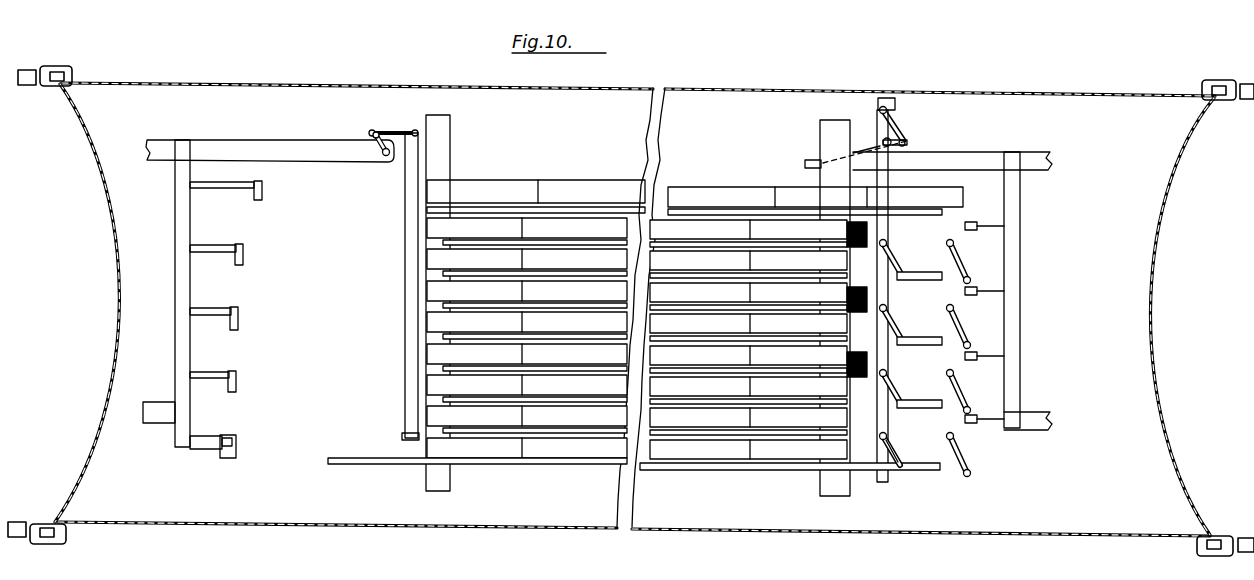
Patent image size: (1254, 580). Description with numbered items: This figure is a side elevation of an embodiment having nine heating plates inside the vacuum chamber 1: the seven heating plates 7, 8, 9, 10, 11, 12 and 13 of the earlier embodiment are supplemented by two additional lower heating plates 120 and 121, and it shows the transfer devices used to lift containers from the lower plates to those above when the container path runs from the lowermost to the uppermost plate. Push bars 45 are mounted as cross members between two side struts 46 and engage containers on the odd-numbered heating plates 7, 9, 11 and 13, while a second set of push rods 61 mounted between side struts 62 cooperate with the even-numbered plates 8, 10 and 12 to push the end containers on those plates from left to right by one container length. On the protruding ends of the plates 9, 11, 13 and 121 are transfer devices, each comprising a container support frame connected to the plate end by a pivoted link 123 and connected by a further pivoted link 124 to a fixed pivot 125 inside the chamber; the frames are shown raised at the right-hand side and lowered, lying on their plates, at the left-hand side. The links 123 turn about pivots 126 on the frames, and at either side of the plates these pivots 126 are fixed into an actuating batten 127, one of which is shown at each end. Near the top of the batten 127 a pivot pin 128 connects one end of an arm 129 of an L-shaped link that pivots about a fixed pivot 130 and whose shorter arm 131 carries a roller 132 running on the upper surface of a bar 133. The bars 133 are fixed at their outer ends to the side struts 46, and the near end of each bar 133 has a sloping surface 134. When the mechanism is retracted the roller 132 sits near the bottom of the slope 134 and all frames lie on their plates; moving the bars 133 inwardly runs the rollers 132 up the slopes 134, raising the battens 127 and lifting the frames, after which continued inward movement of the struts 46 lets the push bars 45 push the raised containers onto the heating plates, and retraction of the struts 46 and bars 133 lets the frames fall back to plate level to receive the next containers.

The vacuum chamber 1 is at (410, 74).
The first heating plate 7 is at (427, 210).
The heating plate 8 is at (398, 240).
The heating plate 9 is at (424, 273).
The heating plate 10 is at (398, 302).
The heating plate 11 is at (424, 341).
The heating plate 12 is at (368, 366).
The heating plate 13 is at (424, 404).
The push bars 45 is at (976, 224).
The side struts 46 is at (1020, 356).
The push rods 61 is at (256, 186).
The side struts 62 is at (178, 294).
The additional lower heating plate 120 is at (695, 329).
The additional lower heating plate 121 is at (410, 462).
The pivoted link 123 is at (890, 448).
The pivoted link 124 is at (968, 468).
The fixed pivot 125 is at (962, 478).
The pivots 126 is at (882, 445).
The actuating batten 127 is at (407, 200).
The pivot pin 128 is at (882, 110).
The arm 129 is at (404, 134).
The fixed pivot 130 is at (378, 150).
The shorter arm 131 is at (908, 148).
The roller 132 is at (865, 155).
The bar 133 is at (248, 150).
The sloping surface 134 is at (375, 152).